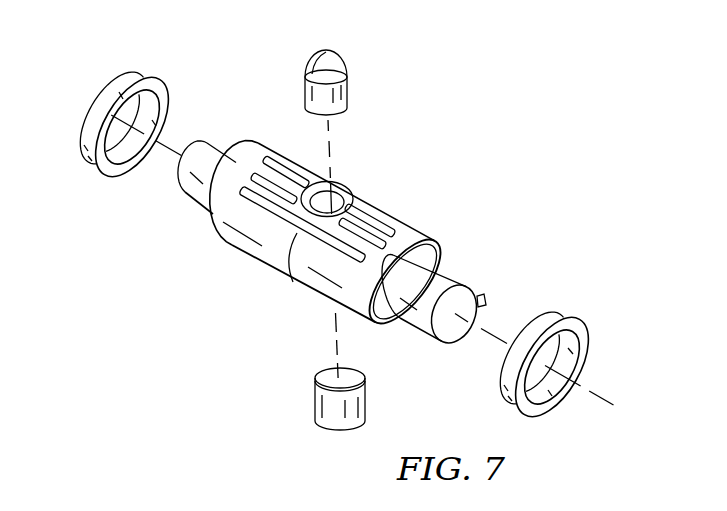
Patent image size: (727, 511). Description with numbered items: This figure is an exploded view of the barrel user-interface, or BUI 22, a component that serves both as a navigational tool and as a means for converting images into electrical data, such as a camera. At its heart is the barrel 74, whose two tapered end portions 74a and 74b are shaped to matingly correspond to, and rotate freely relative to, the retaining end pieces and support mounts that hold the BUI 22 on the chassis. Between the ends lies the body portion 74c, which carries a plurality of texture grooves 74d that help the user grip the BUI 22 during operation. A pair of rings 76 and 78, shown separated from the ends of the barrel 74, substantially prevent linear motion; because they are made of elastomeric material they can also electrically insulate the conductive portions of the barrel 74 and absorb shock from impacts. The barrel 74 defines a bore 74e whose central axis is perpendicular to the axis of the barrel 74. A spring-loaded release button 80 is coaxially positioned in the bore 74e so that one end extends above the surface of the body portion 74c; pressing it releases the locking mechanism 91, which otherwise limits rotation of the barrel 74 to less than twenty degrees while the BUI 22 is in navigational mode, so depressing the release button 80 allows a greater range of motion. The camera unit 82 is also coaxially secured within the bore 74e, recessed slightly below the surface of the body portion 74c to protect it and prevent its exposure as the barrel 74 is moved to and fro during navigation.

The barrel user-interface (BUI) 22 is at (361, 217).
The barrel 74 is at (311, 223).
The end portion 74a is at (200, 189).
The end portion 74b is at (441, 283).
The body portion 74c is at (248, 243).
The slots 74d is at (277, 162).
The bore 74e is at (341, 195).
The ring 76 is at (122, 82).
The ring 78 is at (584, 346).
The release button 80 is at (323, 58).
The camera unit 82 is at (326, 408).
The locking mechanism 91 is at (490, 298).